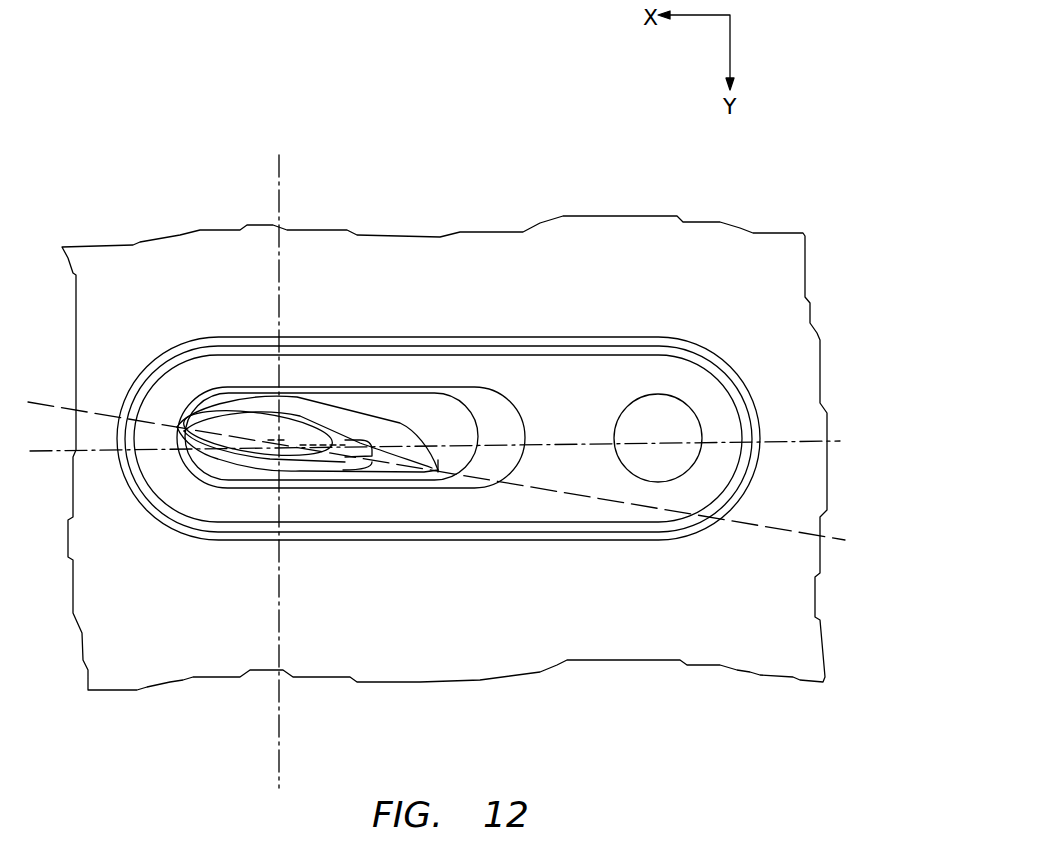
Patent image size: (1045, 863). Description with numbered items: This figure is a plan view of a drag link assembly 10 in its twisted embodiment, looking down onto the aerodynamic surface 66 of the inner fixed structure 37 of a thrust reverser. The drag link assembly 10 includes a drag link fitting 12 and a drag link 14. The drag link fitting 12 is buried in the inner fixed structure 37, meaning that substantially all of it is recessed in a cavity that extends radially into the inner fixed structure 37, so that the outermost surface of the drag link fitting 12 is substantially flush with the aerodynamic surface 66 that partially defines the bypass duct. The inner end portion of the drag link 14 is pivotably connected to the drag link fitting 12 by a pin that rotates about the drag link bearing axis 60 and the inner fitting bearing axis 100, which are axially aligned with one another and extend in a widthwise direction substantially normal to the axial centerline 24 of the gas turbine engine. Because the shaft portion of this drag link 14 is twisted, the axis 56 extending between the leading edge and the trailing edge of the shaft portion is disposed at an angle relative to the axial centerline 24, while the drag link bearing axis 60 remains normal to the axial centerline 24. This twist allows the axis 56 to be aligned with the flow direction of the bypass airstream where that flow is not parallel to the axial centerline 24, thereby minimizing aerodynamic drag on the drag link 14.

The drag link assembly 10 is at (223, 272).
The drag link fitting 12 is at (428, 327).
The drag link 14 is at (322, 421).
The axial centerline 24 is at (773, 441).
The inner fixed structure 37 is at (705, 275).
The axis 56 is at (714, 521).
The drag link bearing axis 60 is at (280, 604).
The aerodynamic surface 66 is at (781, 299).
The inner fitting bearing axis 100 is at (280, 648).